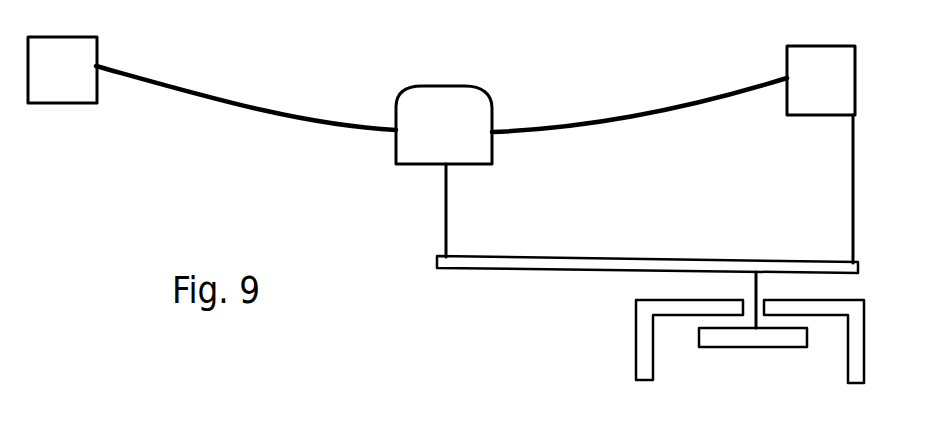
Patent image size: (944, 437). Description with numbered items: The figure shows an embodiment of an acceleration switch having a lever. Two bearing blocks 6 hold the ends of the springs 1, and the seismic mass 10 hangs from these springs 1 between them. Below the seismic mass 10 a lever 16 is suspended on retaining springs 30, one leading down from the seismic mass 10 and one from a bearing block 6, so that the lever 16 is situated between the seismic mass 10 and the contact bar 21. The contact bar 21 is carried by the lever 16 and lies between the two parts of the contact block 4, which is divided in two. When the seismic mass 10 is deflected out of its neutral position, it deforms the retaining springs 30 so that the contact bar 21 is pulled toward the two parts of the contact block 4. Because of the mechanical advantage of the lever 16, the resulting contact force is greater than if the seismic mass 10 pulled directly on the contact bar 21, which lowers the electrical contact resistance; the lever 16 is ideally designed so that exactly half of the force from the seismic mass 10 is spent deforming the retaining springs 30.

The spring 1 is at (241, 106).
The contact block 4 is at (641, 327).
The bearing block 6 is at (58, 42).
The seismic mass 10 is at (477, 103).
The lever 16 is at (647, 262).
The contact bar 21 is at (748, 341).
The retaining spring 30 is at (445, 203).